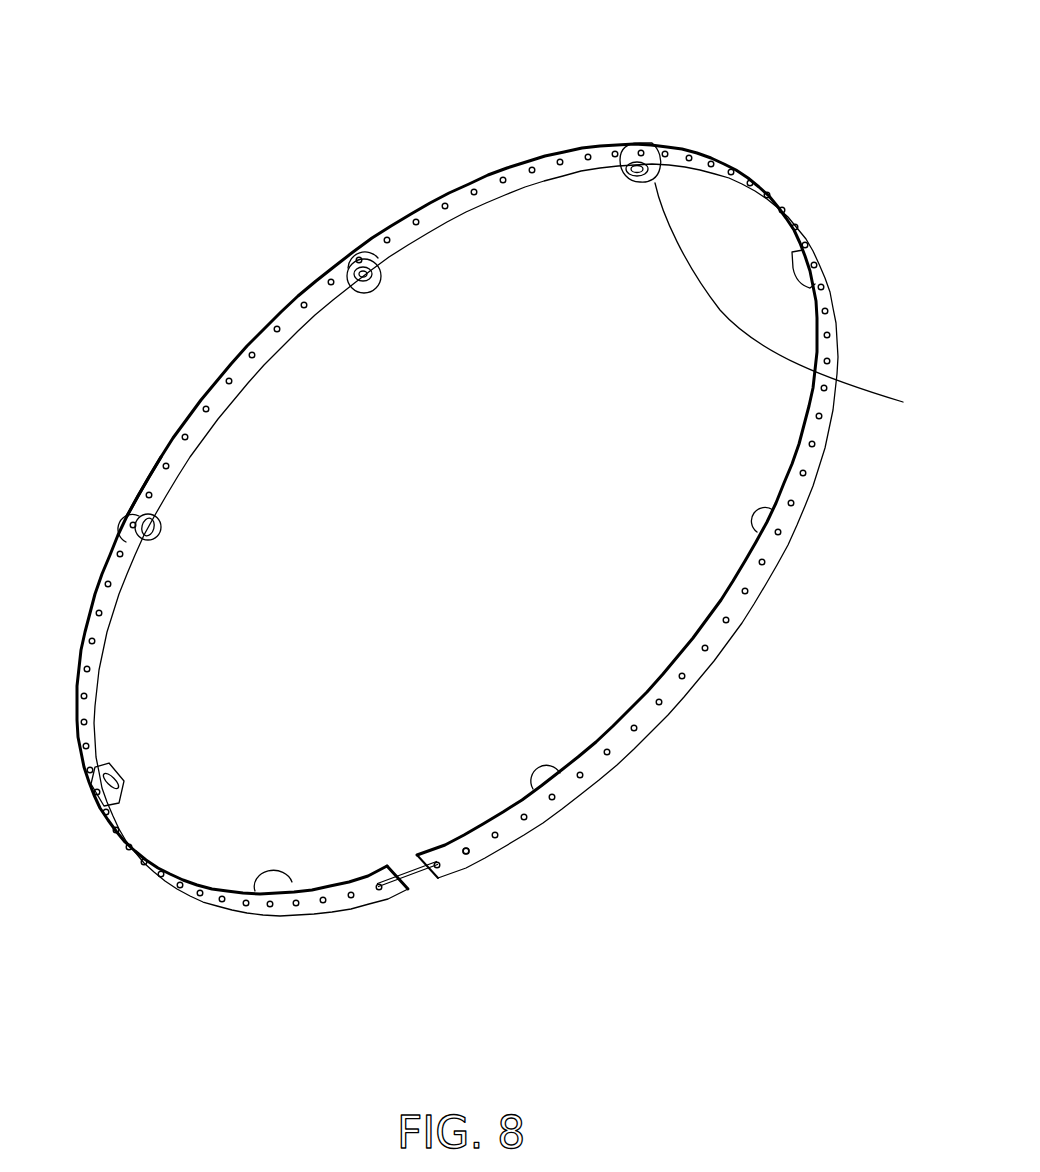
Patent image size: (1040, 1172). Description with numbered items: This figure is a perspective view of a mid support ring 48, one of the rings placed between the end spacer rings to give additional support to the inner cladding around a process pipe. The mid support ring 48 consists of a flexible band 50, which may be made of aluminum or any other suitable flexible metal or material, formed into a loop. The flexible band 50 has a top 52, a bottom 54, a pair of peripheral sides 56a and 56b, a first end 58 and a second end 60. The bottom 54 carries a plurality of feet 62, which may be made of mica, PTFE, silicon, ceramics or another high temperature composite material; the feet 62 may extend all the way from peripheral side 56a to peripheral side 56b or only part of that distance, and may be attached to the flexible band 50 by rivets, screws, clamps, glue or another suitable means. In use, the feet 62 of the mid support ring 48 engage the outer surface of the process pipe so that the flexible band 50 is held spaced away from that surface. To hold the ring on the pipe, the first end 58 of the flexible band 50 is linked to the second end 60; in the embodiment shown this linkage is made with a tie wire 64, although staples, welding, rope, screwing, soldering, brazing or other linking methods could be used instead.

The mid support ring 48 is at (124, 126).
The flexible band 50 is at (488, 168).
The top 52 is at (655, 703).
The bottom 54 is at (153, 480).
The peripheral side 56a is at (197, 390).
The peripheral side 56b is at (347, 363).
The first end 58 is at (468, 848).
The second end 60 is at (392, 893).
The feet 62 is at (800, 262).
The tie wire 64 is at (418, 870).